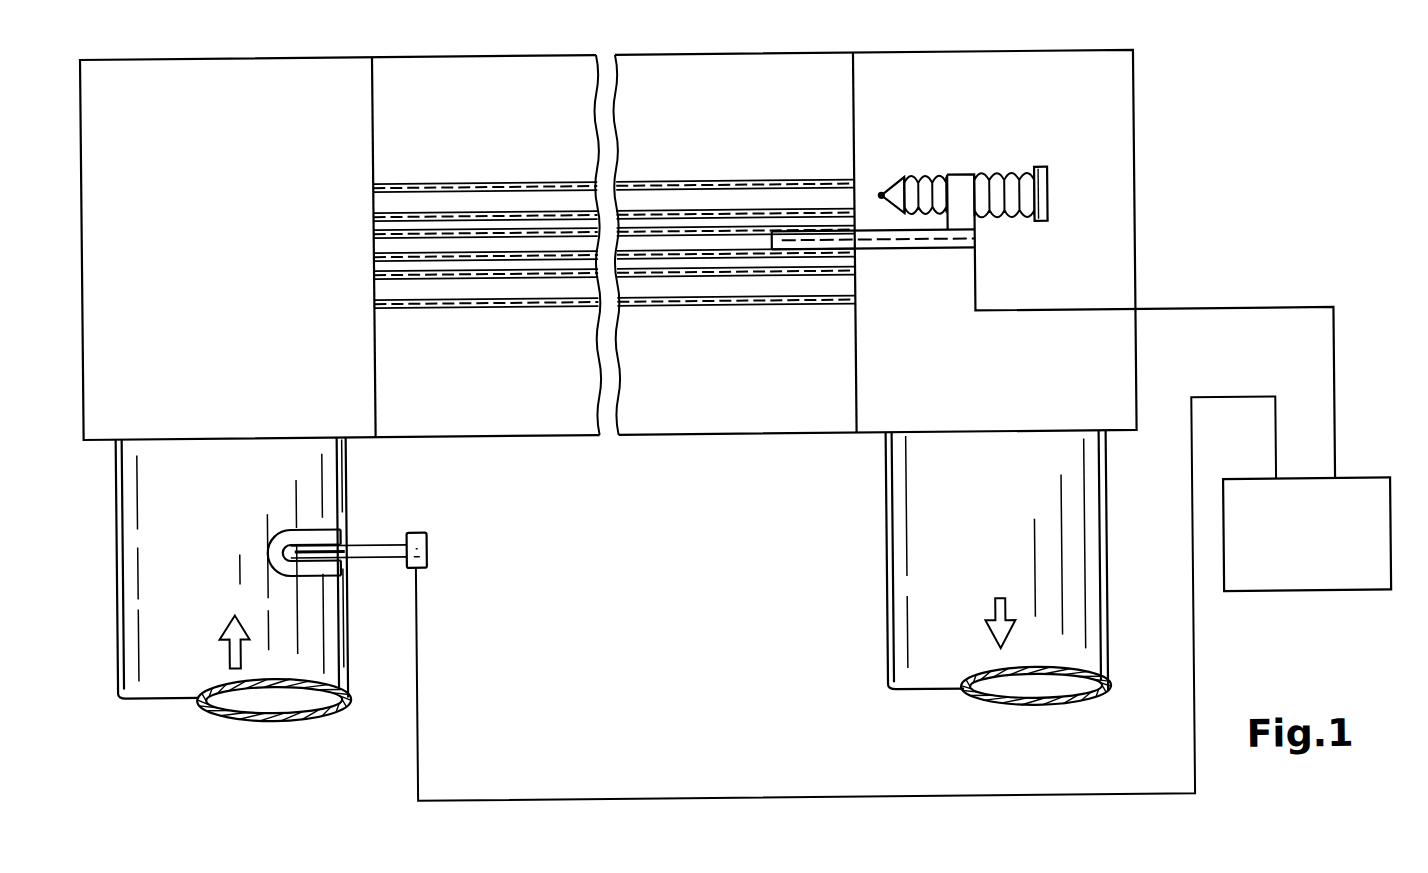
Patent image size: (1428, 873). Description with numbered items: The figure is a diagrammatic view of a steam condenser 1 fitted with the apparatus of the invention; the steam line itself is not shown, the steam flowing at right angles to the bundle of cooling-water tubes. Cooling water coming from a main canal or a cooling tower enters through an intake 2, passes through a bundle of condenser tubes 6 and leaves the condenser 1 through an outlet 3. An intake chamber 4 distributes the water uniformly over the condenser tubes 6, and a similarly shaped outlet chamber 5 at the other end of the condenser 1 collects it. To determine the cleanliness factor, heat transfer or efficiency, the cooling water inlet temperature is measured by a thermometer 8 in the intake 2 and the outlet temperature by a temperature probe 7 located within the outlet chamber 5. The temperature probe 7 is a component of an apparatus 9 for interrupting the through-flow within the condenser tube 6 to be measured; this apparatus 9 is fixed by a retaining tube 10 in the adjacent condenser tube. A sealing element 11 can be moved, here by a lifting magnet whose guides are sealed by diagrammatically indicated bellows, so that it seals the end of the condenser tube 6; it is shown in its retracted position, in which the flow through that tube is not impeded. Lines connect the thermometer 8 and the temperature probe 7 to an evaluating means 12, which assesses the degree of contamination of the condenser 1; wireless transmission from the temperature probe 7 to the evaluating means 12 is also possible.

The steam condenser 1 is at (810, 58).
The intake 2 is at (167, 666).
The outlet 3 is at (945, 654).
The intake chamber 4 is at (320, 77).
The outlet chamber 5 is at (1119, 135).
The condenser tubes 6 is at (717, 241).
The temperature probe 7 is at (880, 203).
The thermometer 8 is at (295, 543).
The apparatus for interrupting through-flow 9 is at (958, 185).
The retaining tube 10 is at (889, 257).
The sealing element 11 is at (893, 208).
The evaluating means 12 is at (1291, 602).